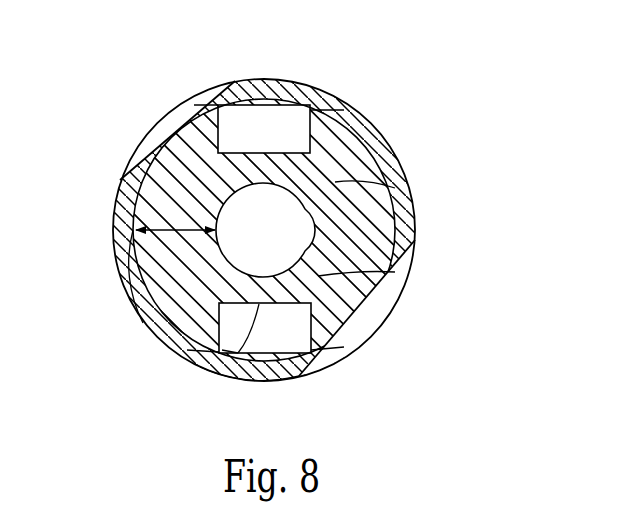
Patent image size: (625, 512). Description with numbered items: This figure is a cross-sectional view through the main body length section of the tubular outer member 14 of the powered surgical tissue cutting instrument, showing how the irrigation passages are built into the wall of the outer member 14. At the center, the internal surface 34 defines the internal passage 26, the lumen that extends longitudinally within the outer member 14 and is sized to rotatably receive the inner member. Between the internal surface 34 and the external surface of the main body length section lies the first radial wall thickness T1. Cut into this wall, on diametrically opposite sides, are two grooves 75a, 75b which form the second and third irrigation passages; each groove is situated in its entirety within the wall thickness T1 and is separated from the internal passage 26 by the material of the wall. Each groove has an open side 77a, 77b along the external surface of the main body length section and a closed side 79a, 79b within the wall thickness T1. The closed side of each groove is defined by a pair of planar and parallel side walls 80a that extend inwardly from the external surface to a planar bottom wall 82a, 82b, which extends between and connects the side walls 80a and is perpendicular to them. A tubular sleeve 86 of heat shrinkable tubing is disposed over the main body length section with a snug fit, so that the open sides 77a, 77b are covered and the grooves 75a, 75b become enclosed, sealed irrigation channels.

The tubular outer member 14 is at (165, 181).
The internal passage 26 is at (143, 323).
The internal surface 34 is at (392, 224).
The groove 75a is at (296, 110).
The groove 75b is at (269, 347).
The open side 77a is at (266, 79).
The open side 77b is at (294, 373).
The closed side 79a is at (335, 182).
The closed side 79b is at (304, 286).
The side wall 80a is at (194, 105).
The bottom wall 82a is at (162, 118).
The bottom wall 82b is at (222, 350).
The tubular sleeve 86 is at (408, 316).
The first radial wall thickness T1 is at (143, 246).